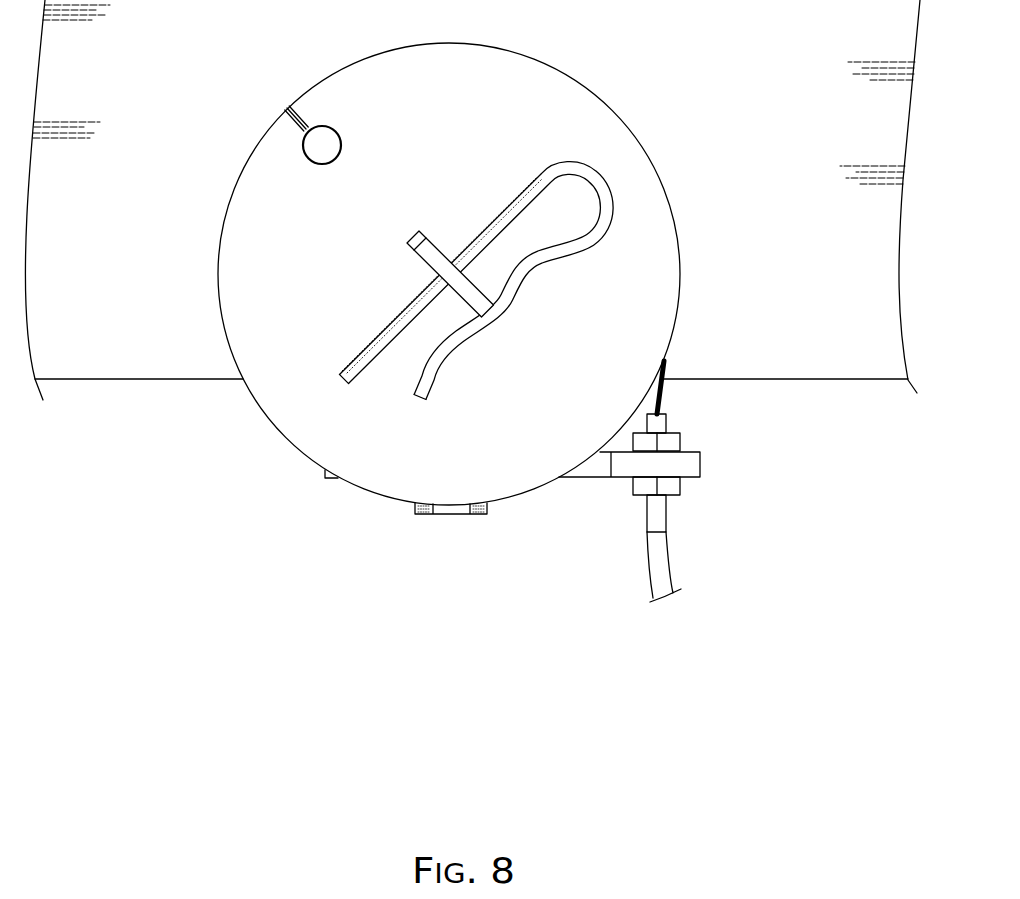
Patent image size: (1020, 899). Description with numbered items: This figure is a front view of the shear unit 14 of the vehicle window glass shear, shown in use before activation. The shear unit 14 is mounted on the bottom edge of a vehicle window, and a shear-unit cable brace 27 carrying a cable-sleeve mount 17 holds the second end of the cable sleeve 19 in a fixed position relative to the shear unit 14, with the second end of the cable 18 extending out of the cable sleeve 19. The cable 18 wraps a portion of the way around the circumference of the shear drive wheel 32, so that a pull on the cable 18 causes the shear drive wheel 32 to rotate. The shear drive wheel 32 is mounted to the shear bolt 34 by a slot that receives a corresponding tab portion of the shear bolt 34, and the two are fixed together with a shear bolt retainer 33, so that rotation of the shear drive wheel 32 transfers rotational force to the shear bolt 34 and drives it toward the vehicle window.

The shear unit 14 is at (177, 568).
The cable-sleeve mount 17 is at (676, 485).
The cable 18 is at (662, 391).
The cable sleeve 19 is at (662, 550).
The shear-unit cable brace 27 is at (600, 473).
The shear drive wheel 32 is at (274, 413).
The shear bolt retainer 33 is at (552, 257).
The shear bolt 34 is at (437, 247).